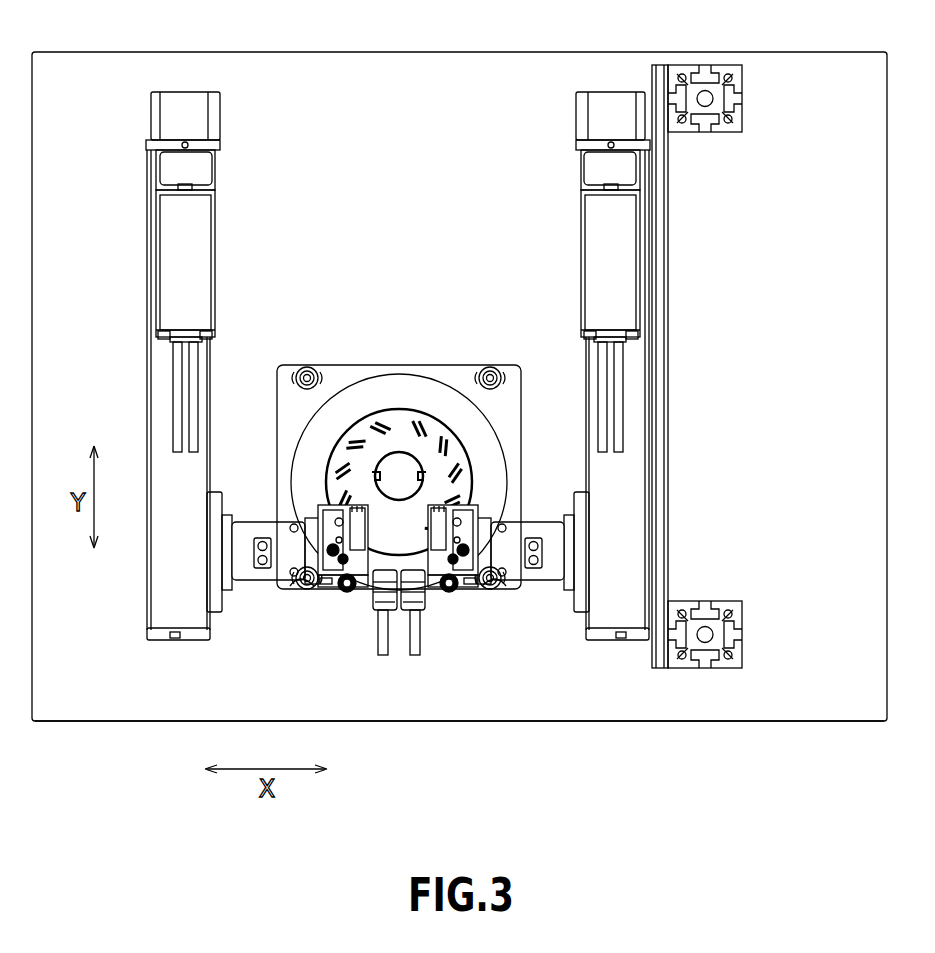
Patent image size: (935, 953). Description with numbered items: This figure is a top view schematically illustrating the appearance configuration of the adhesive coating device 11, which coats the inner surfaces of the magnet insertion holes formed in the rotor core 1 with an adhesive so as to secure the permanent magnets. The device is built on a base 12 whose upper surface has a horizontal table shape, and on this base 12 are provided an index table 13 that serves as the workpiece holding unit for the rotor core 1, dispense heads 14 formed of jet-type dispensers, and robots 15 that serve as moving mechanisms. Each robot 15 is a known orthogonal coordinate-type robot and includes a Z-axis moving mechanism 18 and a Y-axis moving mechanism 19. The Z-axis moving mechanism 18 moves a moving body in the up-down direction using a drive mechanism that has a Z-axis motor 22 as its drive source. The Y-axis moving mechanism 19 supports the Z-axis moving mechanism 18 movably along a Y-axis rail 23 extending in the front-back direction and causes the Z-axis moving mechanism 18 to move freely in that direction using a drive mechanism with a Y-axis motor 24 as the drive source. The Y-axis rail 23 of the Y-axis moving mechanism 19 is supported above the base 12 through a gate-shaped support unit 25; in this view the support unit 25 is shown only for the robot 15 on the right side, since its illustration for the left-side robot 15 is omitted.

The rotor core 1 is at (399, 420).
The adhesive coating device 11 is at (466, 104).
The base 12 is at (93, 703).
The index table 13 is at (447, 400).
The dispense head 14 is at (333, 573).
The robot 15 is at (138, 265).
The Z-axis moving mechanism 18 is at (236, 517).
The Y-axis moving mechanism 19 is at (230, 275).
The Z-axis motor 22 is at (257, 582).
The Y-axis rail 23 is at (208, 358).
The Y-axis motor 24 is at (208, 293).
The support unit 25 is at (670, 553).